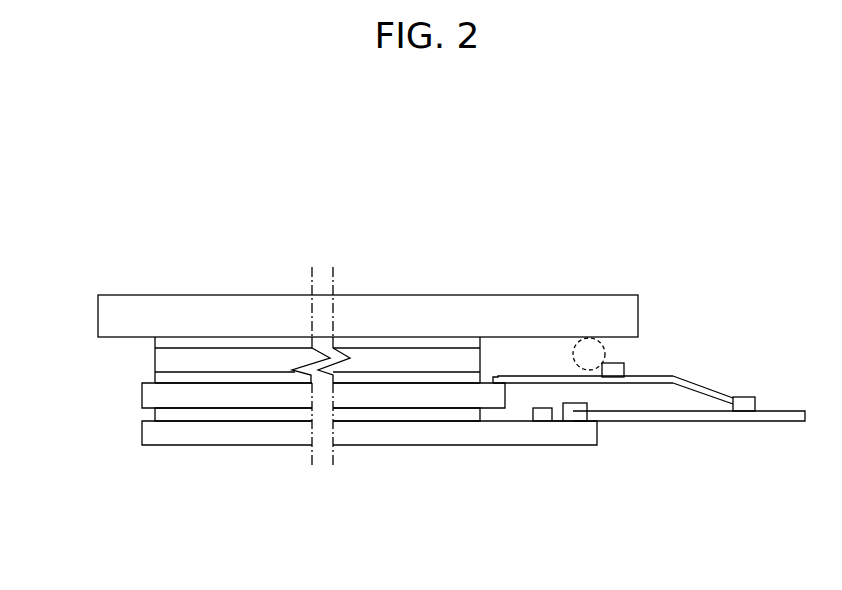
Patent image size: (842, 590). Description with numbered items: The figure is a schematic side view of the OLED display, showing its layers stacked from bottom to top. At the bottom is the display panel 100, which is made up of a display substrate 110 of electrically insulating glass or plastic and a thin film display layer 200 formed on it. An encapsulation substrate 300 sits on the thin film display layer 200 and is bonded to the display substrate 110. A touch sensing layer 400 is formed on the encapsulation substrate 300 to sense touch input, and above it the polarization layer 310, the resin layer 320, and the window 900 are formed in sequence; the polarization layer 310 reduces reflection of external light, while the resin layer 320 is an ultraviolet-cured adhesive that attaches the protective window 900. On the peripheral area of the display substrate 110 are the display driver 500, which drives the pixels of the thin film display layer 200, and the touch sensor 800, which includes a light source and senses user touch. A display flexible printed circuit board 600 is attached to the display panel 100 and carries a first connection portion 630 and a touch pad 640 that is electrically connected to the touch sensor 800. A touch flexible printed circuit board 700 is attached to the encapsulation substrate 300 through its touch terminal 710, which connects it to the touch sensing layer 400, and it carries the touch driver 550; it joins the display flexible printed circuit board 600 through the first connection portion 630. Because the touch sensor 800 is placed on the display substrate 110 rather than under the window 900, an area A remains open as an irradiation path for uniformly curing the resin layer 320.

The display panel 100 is at (369, 483).
The display substrate 110 is at (165, 512).
The thin film display layer 200 is at (178, 415).
The encapsulation substrate 300 is at (150, 396).
The polarization layer 310 is at (204, 360).
The resin layer 320 is at (258, 342).
The touch sensing layer 400 is at (167, 378).
The display driver 500 is at (530, 412).
The touch driver 550 is at (625, 369).
The display flexible printed circuit board 600 is at (681, 430).
The first connection portion 630 is at (744, 400).
The touch pad 640 is at (585, 407).
The touch flexible printed circuit board 700 is at (699, 376).
The touch terminal 710 is at (502, 376).
The touch sensor 800 is at (557, 412).
The window 900 is at (392, 317).
The area A is at (573, 357).